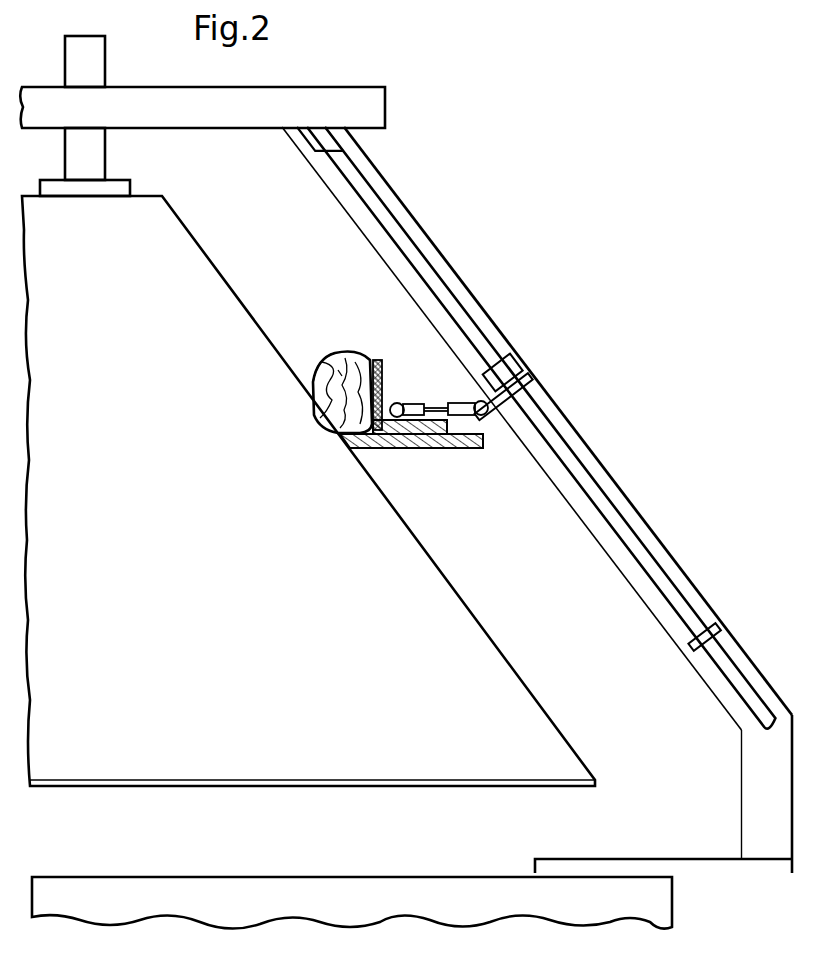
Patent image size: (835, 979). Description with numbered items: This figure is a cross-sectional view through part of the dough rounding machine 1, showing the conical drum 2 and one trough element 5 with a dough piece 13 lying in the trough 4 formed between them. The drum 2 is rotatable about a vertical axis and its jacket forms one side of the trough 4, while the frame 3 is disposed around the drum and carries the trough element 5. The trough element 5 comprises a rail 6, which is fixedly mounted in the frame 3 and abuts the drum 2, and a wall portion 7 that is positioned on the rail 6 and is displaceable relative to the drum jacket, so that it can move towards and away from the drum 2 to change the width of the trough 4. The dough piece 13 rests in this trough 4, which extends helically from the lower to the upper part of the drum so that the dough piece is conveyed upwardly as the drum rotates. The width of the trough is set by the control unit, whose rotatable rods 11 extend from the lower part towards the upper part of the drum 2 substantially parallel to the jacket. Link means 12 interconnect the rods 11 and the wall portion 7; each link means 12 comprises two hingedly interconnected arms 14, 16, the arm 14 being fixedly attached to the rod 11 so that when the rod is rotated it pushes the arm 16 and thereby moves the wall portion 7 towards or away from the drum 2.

The dough rounding machine 1 is at (478, 292).
The conical drum 2 is at (232, 645).
The frame 3 is at (750, 812).
The trough 4 is at (353, 370).
The trough element 5 is at (424, 450).
The rail 6 is at (476, 448).
The wall portion 7 is at (381, 368).
The rotatable rod 11 is at (430, 272).
The link means 12 is at (462, 395).
The dough piece 13 is at (313, 372).
The arm 14 is at (530, 374).
The arm 16 is at (417, 402).